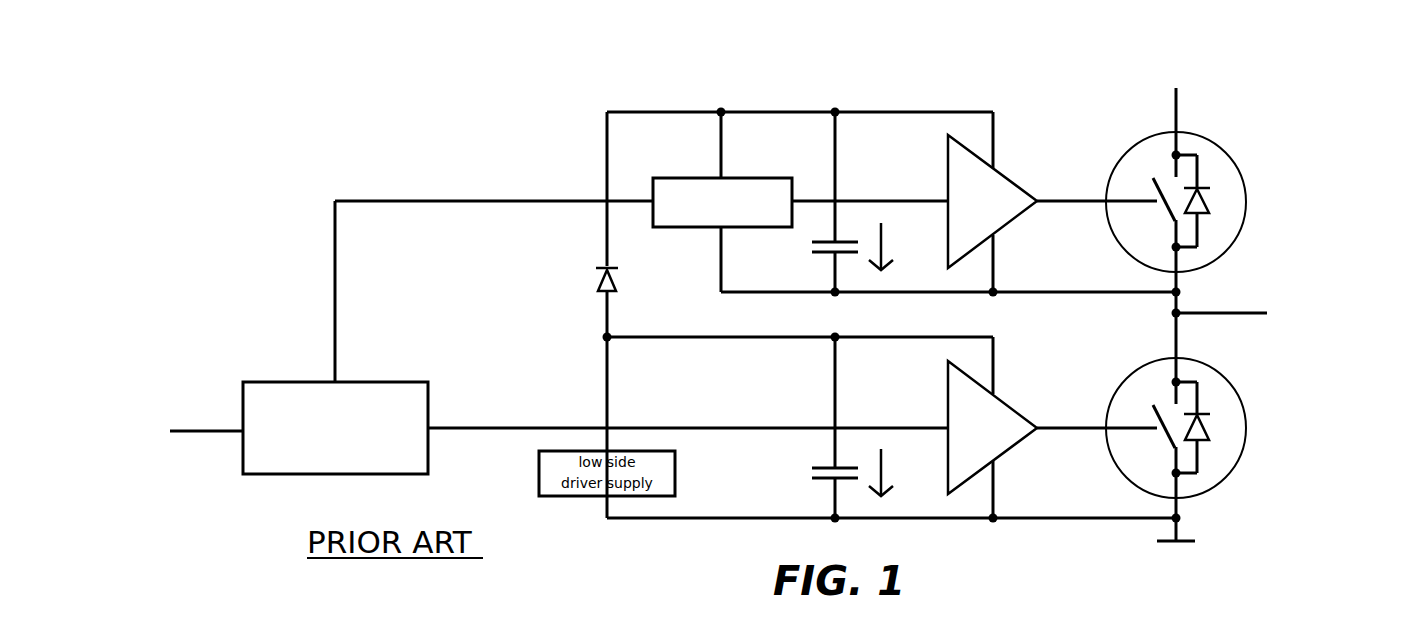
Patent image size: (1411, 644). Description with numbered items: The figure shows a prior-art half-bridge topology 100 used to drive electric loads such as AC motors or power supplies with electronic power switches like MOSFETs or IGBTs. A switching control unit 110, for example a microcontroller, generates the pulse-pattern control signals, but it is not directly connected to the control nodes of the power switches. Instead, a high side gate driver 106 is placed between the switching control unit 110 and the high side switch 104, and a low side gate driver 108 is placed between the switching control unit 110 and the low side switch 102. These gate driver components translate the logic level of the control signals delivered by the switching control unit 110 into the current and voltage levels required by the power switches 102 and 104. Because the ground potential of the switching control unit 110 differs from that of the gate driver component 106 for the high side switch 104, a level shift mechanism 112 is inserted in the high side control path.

The half-bridge topology 100 is at (291, 108).
The low side switch 102 is at (1234, 393).
The high side switch 104 is at (1234, 173).
The high side gate driver 106 is at (1024, 191).
The low side gate driver 108 is at (1011, 410).
The switching control unit 110 is at (279, 382).
The level shift mechanism 112 is at (677, 178).